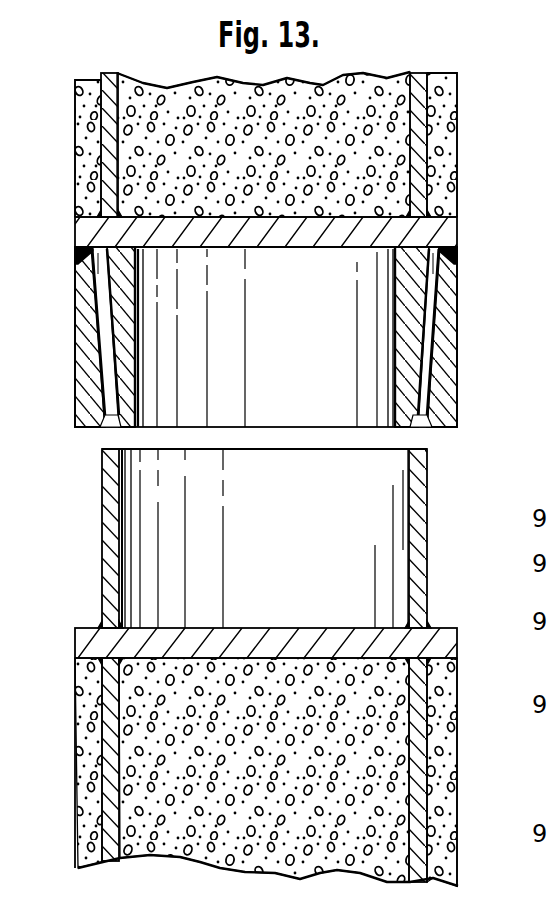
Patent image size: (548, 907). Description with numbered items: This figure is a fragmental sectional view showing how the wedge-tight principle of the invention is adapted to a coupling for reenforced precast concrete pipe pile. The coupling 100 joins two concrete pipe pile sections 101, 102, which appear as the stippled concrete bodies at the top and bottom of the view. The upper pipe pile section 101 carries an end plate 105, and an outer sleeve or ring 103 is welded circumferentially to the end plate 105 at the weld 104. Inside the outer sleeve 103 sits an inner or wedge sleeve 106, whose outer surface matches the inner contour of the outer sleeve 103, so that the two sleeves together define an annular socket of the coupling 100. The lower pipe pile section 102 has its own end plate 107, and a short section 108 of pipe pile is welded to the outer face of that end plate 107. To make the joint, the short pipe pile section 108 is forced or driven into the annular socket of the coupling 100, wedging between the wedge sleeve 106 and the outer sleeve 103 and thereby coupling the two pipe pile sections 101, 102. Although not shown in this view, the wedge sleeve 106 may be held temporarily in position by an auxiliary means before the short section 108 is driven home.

The coupling 100 is at (76, 399).
The concrete pipe pile section 101 is at (88, 162).
The concrete pipe pile section 102 is at (90, 735).
The outer sleeve 103 is at (440, 343).
The circumferential weld 104 is at (456, 247).
The end plate 105 is at (455, 228).
The wedge sleeve 106 is at (400, 343).
The end plate 107 is at (97, 643).
The short section of pipe pile 108 is at (106, 518).